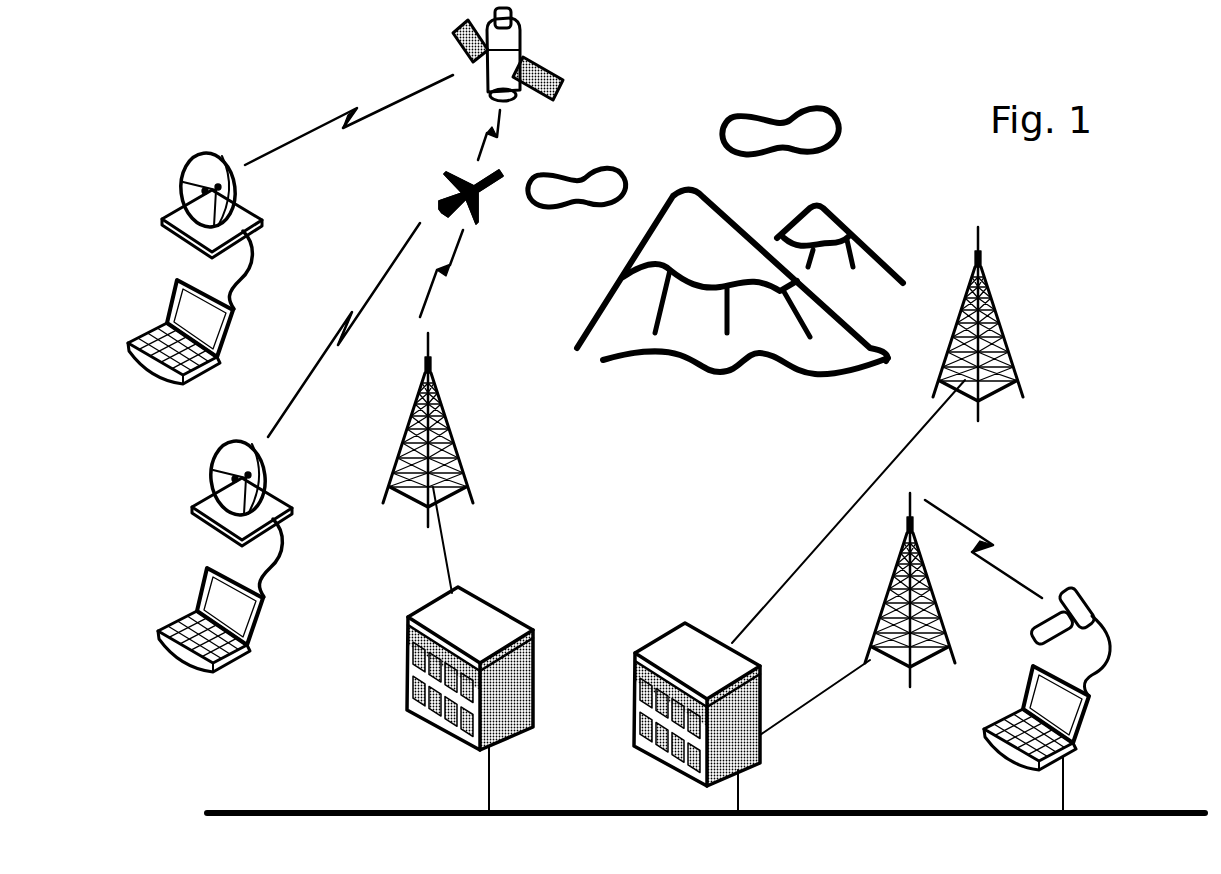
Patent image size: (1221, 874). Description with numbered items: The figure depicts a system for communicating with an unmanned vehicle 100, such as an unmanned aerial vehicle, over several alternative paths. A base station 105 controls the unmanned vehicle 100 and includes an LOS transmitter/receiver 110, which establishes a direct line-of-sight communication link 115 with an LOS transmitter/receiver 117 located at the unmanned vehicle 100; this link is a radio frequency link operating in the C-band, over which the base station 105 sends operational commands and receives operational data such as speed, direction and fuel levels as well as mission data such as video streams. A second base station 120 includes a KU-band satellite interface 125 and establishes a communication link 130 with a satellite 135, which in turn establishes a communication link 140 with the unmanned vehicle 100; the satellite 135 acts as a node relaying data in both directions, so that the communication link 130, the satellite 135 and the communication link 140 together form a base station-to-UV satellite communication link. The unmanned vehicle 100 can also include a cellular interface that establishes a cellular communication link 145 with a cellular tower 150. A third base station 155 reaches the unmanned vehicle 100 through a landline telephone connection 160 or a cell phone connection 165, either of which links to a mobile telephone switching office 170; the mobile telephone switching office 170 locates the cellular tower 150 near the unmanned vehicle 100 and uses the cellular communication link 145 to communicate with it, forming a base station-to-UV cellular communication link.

The unmanned vehicle 100 is at (443, 193).
The base station 105 is at (186, 550).
The LOS transmitter/receiver 110 is at (216, 468).
The communication link 115 is at (358, 317).
The LOS transmitter/receiver 117 is at (467, 213).
The second base station 120 is at (162, 251).
The KU-band satellite interface 125 is at (193, 165).
The communication link 130 is at (347, 113).
The satellite 135 is at (518, 38).
The communication link 140 is at (500, 132).
The cellular communication link 145 is at (450, 272).
The cellular tower 150 is at (440, 410).
The third base station 155 is at (1117, 575).
The landline telephone connection 160 is at (1063, 783).
The cell phone connection 165 is at (982, 535).
The mobile telephone switching office 170 is at (497, 605).